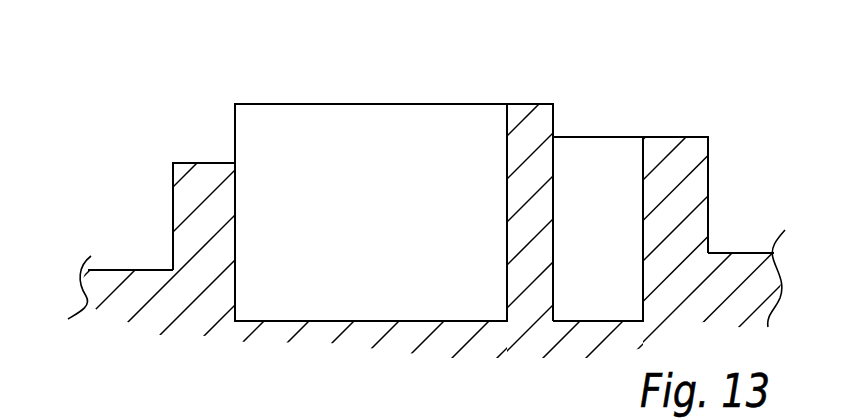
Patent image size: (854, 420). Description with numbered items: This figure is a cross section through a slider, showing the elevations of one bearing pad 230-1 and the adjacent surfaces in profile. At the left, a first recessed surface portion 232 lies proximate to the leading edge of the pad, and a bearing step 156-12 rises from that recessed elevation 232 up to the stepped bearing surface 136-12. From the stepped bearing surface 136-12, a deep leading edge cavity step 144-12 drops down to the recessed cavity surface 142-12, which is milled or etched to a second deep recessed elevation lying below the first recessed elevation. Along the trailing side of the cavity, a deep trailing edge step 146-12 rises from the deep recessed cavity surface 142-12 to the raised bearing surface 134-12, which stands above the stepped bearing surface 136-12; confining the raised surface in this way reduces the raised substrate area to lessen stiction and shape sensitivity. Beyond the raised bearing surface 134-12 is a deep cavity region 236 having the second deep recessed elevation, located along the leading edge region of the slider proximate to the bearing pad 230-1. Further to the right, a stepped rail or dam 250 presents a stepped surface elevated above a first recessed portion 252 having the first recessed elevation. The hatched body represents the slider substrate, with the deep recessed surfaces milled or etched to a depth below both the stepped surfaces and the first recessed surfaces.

The first recessed surface portion 232 is at (112, 270).
The bearing step 156-12 is at (185, 210).
The stepped bearing surface 136-12 is at (208, 159).
The bearing pad 230-1 is at (387, 98).
The leading edge cavity step 144-12 is at (270, 212).
The recessed cavity surface 142-12 is at (327, 320).
The trailing edge step 146-12 is at (507, 160).
The raised bearing surface 134-12 is at (525, 104).
The deep cavity region 236 is at (603, 320).
The stepped rail 250 is at (653, 137).
The first recessed portion 252 is at (727, 253).